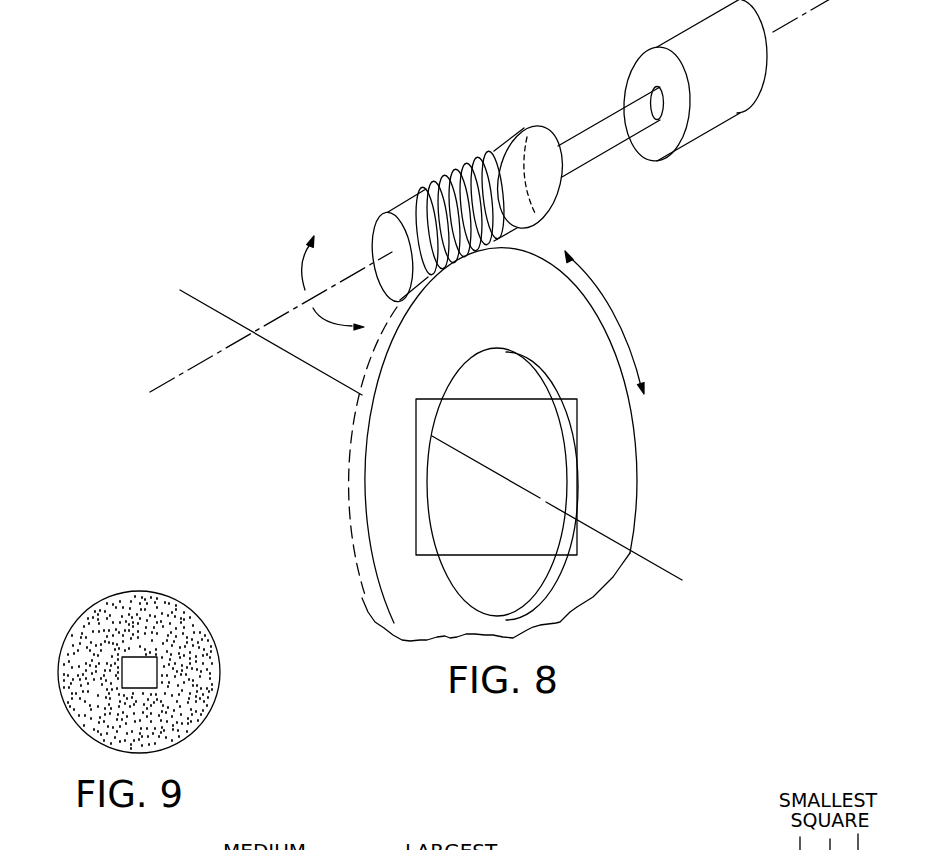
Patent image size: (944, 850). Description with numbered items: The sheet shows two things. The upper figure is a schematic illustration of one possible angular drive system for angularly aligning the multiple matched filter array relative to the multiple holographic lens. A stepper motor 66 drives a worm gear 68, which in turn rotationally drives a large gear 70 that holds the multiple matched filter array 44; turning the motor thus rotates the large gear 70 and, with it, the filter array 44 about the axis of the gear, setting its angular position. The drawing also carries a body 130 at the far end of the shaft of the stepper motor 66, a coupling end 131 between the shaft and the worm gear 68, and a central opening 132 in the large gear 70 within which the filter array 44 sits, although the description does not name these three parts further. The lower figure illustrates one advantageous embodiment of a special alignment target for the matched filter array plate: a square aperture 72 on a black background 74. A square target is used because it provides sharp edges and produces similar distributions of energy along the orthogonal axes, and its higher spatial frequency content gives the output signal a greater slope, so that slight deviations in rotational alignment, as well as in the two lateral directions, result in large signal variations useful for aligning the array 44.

In FIG. 8, the multiple matched filter array 44 is at (415, 452).
In FIG. 8, the stepper motor 66 is at (657, 47).
In FIG. 8, the worm gear 68 is at (418, 193).
In FIG. 8, the large gear 70 is at (633, 440).
In FIG. 9, the square aperture 72 is at (128, 683).
In FIG. 9, the black background 74 is at (215, 642).
In FIG. 8, the motor cylinder 130 is at (703, 136).
In FIG. 8, the coupling end cap 131 is at (497, 157).
In FIG. 8, the central hub opening 132 is at (630, 505).